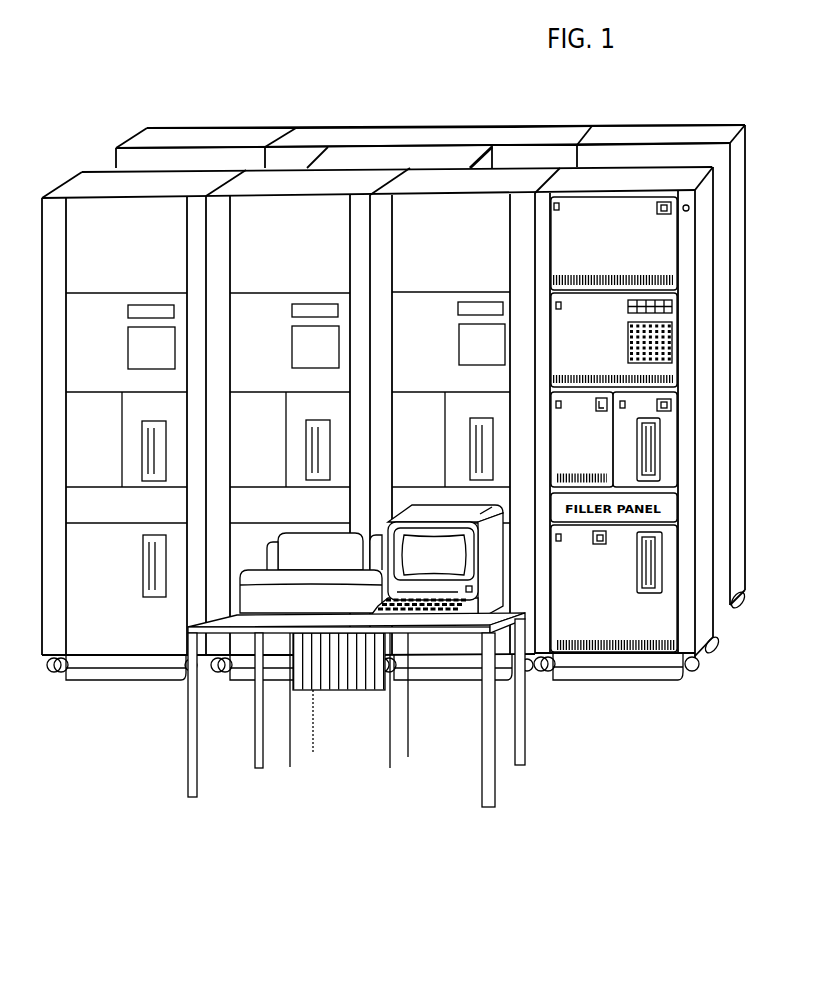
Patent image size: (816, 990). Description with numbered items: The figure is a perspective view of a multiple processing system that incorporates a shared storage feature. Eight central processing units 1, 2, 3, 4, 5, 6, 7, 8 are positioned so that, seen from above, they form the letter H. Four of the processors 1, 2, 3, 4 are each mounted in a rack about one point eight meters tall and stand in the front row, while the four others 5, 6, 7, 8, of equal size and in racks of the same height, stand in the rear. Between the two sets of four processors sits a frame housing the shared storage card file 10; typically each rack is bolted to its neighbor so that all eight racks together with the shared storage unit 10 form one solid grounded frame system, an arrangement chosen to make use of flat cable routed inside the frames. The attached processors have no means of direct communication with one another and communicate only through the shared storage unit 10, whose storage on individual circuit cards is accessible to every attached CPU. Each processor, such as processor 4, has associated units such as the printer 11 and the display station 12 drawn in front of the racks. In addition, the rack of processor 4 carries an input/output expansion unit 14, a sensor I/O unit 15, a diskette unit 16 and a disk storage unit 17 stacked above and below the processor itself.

The central processing unit 1 is at (91, 325).
The central processing unit 2 is at (252, 325).
The central processing unit 3 is at (415, 323).
The central processing unit 4 is at (586, 360).
The central processing unit 5 is at (182, 161).
The central processing unit 6 is at (297, 162).
The central processing unit 7 is at (534, 160).
The central processing unit 8 is at (683, 161).
The shared storage card file 10 is at (370, 158).
The printer 11 is at (257, 568).
The display station 12 is at (498, 564).
The input/output expansion unit 14 is at (637, 270).
The sensor I/O unit 15 is at (557, 424).
The diskette unit 16 is at (633, 439).
The disk storage unit 17 is at (591, 581).